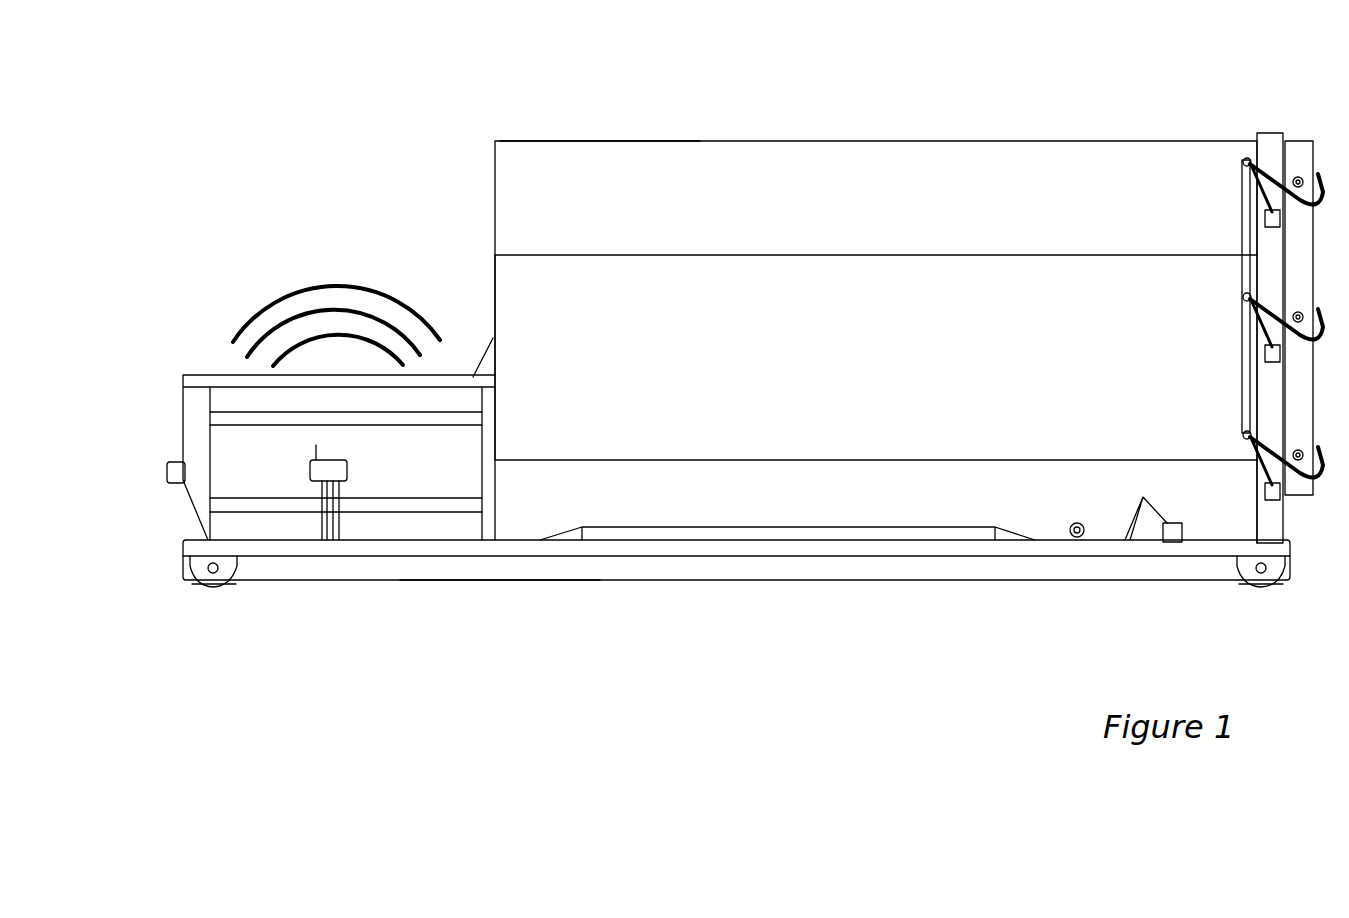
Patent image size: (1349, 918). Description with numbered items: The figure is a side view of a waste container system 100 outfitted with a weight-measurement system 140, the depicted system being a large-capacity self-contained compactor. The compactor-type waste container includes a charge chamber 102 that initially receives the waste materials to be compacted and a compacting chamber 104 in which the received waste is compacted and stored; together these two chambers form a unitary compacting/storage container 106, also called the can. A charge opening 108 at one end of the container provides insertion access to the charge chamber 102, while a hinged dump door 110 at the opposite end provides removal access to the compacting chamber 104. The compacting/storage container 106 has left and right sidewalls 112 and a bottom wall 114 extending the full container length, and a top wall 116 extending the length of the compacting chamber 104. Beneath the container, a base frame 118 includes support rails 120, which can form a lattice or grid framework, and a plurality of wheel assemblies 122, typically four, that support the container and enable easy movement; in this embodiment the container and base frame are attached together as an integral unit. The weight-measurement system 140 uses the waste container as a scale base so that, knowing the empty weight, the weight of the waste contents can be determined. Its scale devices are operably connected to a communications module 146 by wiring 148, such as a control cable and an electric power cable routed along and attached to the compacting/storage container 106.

The waste container system 100 is at (936, 82).
The charge chamber 102 is at (226, 358).
The compacting chamber 104 is at (752, 128).
The compacting/storage container 106 is at (560, 113).
The charge opening 108 is at (450, 360).
The hinged dump door 110 is at (1310, 118).
The sidewalls 112 is at (795, 355).
The bottom wall 114 is at (653, 557).
The top wall 116 is at (641, 138).
The base frame 118 is at (494, 604).
The support rails 120 is at (367, 583).
The wheel assemblies 122 is at (244, 590).
The weight-measurement system 140 is at (226, 630).
The communications module 146 is at (293, 452).
The wiring 148 is at (308, 527).